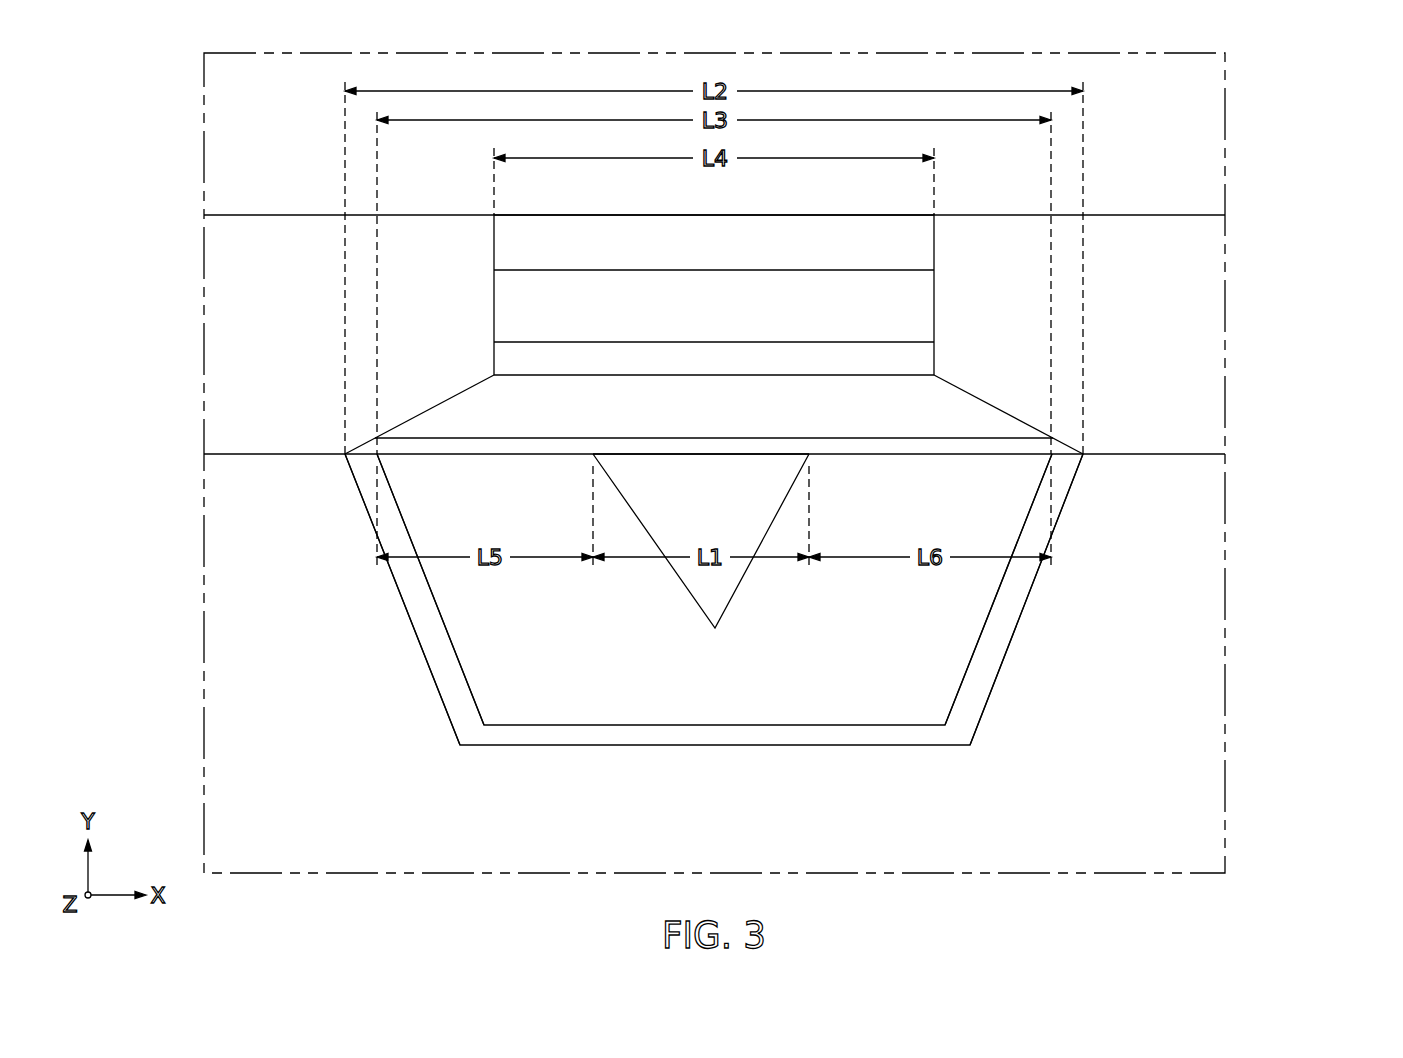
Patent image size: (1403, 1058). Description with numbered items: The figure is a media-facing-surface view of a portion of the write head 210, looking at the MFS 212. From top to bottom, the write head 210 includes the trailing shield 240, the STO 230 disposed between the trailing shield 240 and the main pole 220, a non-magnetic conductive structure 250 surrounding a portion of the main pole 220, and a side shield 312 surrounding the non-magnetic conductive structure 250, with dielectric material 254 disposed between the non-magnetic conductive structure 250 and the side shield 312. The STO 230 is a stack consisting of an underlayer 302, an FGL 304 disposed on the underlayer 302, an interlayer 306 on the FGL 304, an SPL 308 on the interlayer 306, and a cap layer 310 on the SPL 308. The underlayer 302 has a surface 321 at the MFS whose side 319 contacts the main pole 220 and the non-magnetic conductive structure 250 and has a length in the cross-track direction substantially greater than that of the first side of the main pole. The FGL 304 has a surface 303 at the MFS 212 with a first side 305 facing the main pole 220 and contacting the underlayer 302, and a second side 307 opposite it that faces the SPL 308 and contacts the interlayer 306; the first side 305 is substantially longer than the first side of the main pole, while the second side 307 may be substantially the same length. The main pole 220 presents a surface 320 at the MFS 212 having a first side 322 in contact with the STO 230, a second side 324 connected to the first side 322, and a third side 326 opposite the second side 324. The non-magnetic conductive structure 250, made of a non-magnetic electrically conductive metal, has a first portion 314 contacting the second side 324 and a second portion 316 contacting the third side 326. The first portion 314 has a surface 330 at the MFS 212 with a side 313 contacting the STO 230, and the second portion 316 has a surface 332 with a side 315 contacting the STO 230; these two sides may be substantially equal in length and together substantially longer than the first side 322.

The write head 210 is at (1295, 77).
The MFS 212 is at (181, 177).
The main pole 220 is at (730, 595).
The STO 230 is at (946, 268).
The trailing shield 240 is at (760, 195).
The non-magnetic conductive structure 250 is at (803, 684).
The dielectric material 254 is at (270, 318).
The underlayer 302 is at (548, 446).
The surface 303 is at (950, 412).
The FGL 304 is at (692, 425).
The first side 305 is at (484, 438).
The interlayer 306 is at (692, 370).
The second side 307 is at (538, 376).
The SPL 308 is at (692, 320).
The cap layer 310 is at (692, 255).
The side shield 312 is at (692, 843).
The side 313 is at (523, 455).
The first portion 314 is at (492, 595).
The side 315 is at (905, 455).
The second portion 316 is at (943, 593).
The side 319 is at (988, 455).
The surface 320 is at (692, 507).
The surface 321 is at (1003, 438).
The first side 322 is at (762, 455).
The second side 324 is at (690, 592).
The third side 326 is at (780, 507).
The surface 330 is at (513, 678).
The surface 332 is at (923, 653).